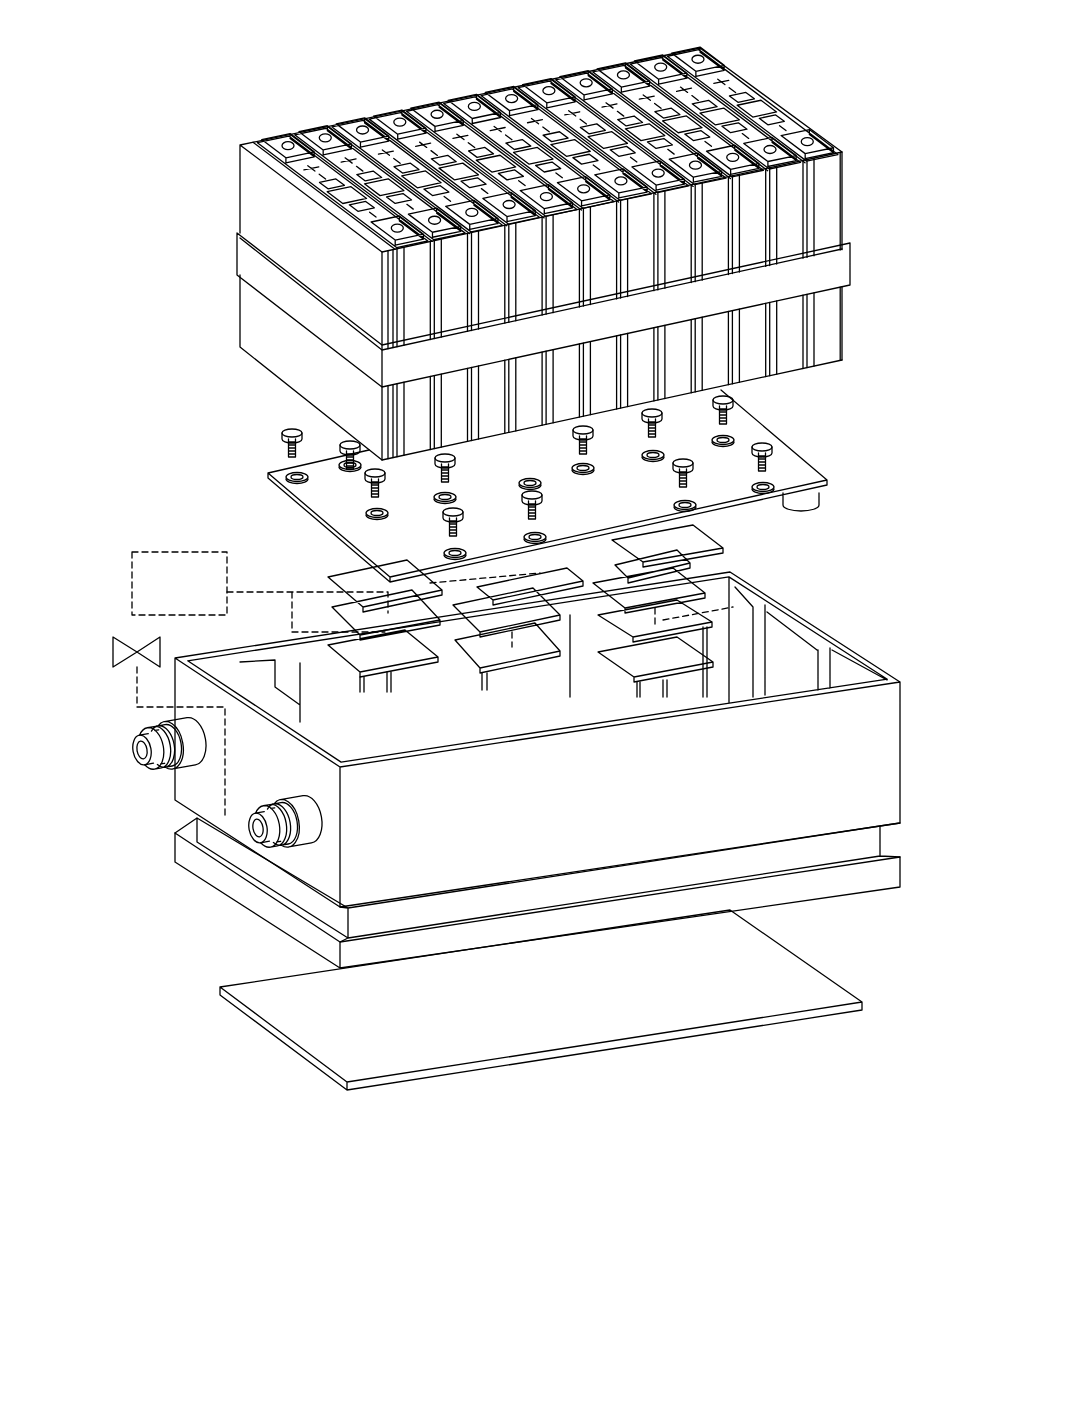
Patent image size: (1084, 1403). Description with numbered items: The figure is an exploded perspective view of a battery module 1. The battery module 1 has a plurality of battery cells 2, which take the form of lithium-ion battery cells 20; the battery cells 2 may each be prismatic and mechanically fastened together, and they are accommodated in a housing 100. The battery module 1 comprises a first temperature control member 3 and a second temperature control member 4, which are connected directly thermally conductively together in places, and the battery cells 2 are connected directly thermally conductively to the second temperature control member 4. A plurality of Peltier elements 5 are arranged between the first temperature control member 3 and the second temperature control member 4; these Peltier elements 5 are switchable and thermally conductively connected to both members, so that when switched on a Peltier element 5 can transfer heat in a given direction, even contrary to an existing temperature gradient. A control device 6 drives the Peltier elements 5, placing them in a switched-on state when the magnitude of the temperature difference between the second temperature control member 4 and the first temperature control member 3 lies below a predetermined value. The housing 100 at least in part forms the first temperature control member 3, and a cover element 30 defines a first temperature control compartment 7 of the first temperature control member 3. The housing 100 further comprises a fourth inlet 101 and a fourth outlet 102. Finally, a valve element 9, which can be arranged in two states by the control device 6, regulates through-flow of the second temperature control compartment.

The battery module 1 is at (190, 85).
The battery cells 2 is at (306, 168).
The lithium-ion battery cells 20 is at (367, 157).
The first temperature control member 3 is at (272, 953).
The second temperature control member 4 is at (793, 478).
The Peltier elements 5 is at (697, 568).
The control device 6 is at (178, 552).
The first temperature control compartment 7 is at (377, 972).
The valve element 9 is at (125, 652).
The cover element 30 is at (735, 998).
The housing 100 is at (243, 800).
The fourth inlet 101 is at (253, 832).
The fourth outlet 102 is at (135, 763).